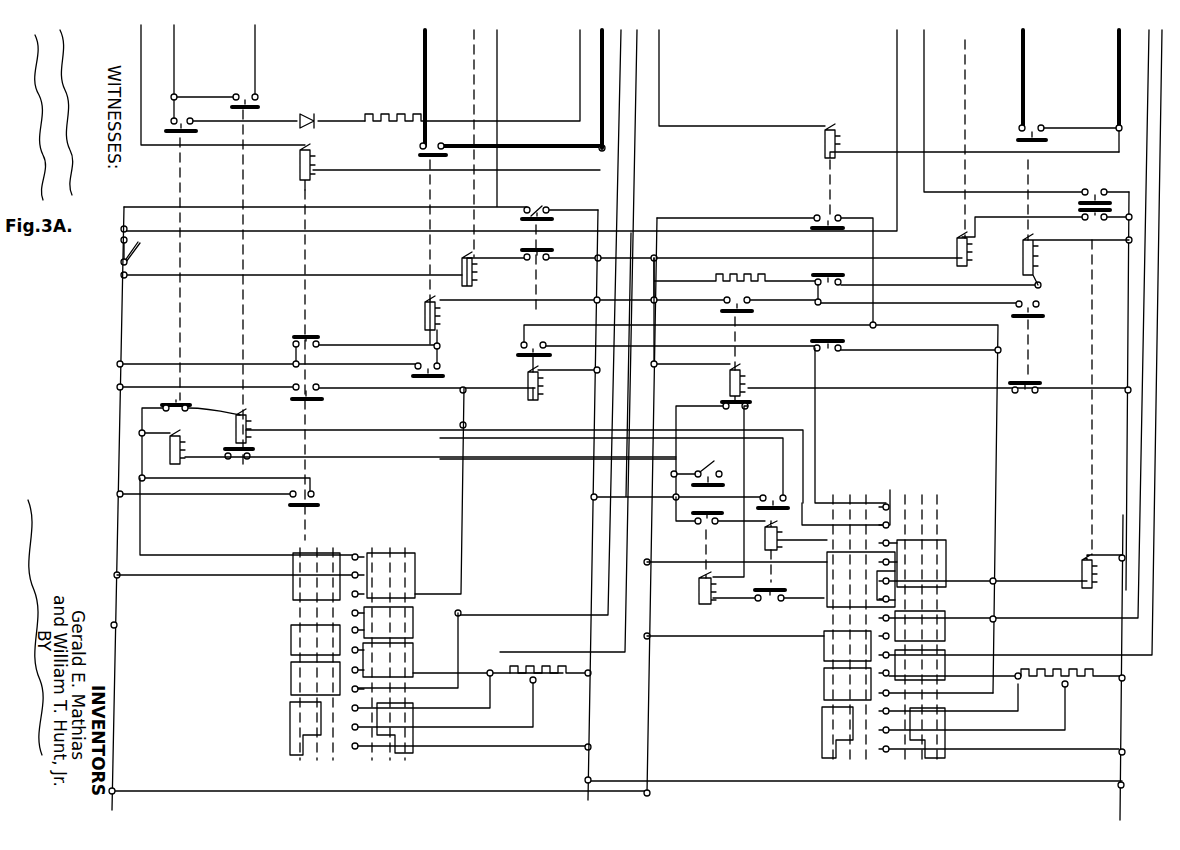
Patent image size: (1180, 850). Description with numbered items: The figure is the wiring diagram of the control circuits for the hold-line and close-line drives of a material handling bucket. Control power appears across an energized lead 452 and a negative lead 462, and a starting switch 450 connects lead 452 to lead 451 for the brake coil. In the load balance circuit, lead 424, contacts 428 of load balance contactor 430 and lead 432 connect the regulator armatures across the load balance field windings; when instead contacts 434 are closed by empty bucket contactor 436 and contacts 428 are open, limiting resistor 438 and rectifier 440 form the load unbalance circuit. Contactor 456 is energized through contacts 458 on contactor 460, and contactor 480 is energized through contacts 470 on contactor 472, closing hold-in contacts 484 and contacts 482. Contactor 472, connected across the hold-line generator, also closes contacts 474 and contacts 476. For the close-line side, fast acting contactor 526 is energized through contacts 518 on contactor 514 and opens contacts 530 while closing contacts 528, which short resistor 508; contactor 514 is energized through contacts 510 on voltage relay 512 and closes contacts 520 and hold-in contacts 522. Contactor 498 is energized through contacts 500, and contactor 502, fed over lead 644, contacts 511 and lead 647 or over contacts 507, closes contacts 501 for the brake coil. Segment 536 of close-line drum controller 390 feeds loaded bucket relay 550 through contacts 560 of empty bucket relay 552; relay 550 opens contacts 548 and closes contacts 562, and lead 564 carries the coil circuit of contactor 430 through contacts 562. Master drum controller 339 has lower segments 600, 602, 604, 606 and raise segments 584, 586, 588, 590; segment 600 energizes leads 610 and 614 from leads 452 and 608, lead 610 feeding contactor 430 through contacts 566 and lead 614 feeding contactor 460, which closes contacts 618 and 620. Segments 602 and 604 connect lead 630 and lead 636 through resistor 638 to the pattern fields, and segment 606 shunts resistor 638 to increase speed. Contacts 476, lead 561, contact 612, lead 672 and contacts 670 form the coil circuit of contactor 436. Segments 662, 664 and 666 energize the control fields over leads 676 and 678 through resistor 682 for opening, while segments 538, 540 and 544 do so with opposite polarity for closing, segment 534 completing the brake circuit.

The lead 424 is at (172, 67).
The contacts 428 is at (256, 97).
The load balance contactor 430 is at (240, 185).
The lead 432 is at (255, 60).
The contacts 434 is at (196, 129).
The empty bucket contactor 436 is at (180, 330).
The limiting resistor 438 is at (472, 75).
The rectifier 440 is at (306, 113).
The starting switch 450 is at (144, 252).
The lead 451 is at (510, 130).
The lead 452 is at (119, 463).
The contactor 456 is at (474, 86).
The contacts 458 is at (544, 261).
The contactor 460 is at (544, 288).
The negative lead 462 is at (590, 729).
The contacts 470 is at (320, 330).
The contactor 472 is at (306, 266).
The contacts 474 is at (328, 408).
The contacts 476 is at (289, 507).
The contactor 480 is at (431, 246).
The contacts 482 is at (422, 147).
The hold-in contacts 484 is at (442, 371).
The contactor 498 is at (965, 105).
The contacts 500 is at (1094, 222).
The contacts 501 is at (1096, 190).
The contactor 502 is at (1089, 504).
The contacts 507 is at (818, 218).
The resistor 508 is at (760, 278).
The contacts 510 is at (829, 288).
The contacts 511 is at (837, 345).
The voltage relay contactor 512 is at (830, 180).
The contactor 514 is at (1032, 358).
The contacts 518 is at (936, 401).
The contacts 520 is at (1034, 124).
The hold-in contacts 522 is at (1034, 319).
The fast acting contactor 526 is at (757, 338).
The contacts 528 is at (721, 311).
The contacts 530 is at (732, 412).
The segment 534 is at (882, 616).
The segment 536 is at (946, 558).
The segment 538 is at (945, 638).
The segment 540 is at (945, 668).
The segment 544 is at (945, 725).
The contacts 548 is at (768, 602).
The loaded bucket relay 550 is at (772, 576).
The empty bucket relay 552 is at (702, 552).
The contacts 560 is at (705, 523).
The lead 561 is at (256, 486).
The contacts 562 is at (770, 488).
The lead 564 is at (402, 432).
The contacts 566 is at (183, 404).
The segment 584 is at (416, 569).
The segment 586 is at (415, 633).
The segment 588 is at (414, 661).
The segment 590 is at (414, 721).
The segment 600 is at (290, 566).
The segment 602 is at (290, 643).
The segment 604 is at (290, 676).
The segment 606 is at (290, 714).
The lead 608 is at (234, 574).
The lead 610 is at (234, 554).
The contact 612 is at (235, 460).
The lead 614 is at (464, 563).
The contacts 618 is at (361, 124).
The contacts 620 is at (542, 355).
The lead 630 is at (637, 169).
The lead 636 is at (600, 58).
The resistor 638 is at (494, 666).
The lead 644 is at (816, 422).
The lead 647 is at (996, 502).
The segment 662 is at (824, 650).
The segment 664 is at (824, 682).
The segment 666 is at (822, 722).
The contacts 670 is at (611, 468).
The lead 672 is at (392, 457).
The lead 676 is at (1140, 515).
The lead 678 is at (1142, 451).
The resistor 682 is at (1004, 689).
The master drum controller 339 is at (354, 772).
The close-line drum controller 390 is at (884, 767).